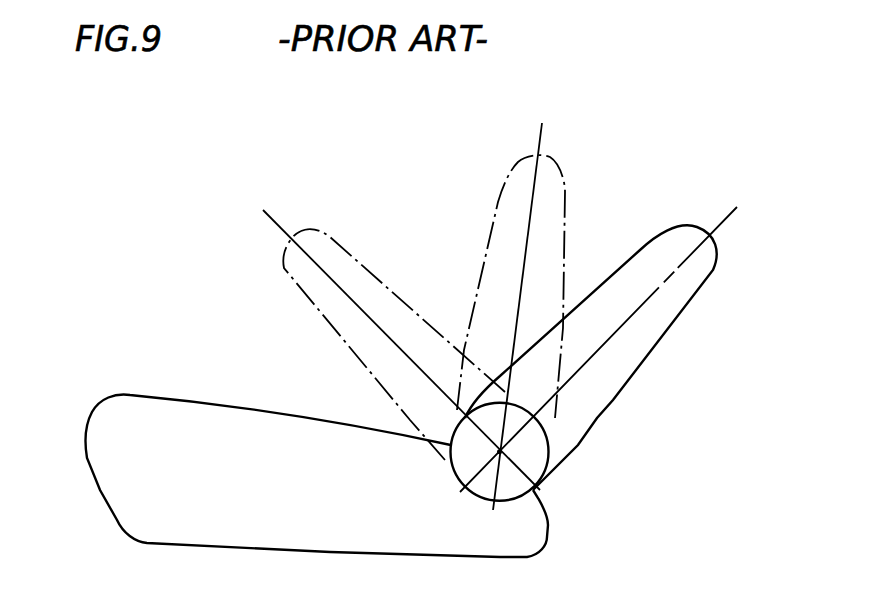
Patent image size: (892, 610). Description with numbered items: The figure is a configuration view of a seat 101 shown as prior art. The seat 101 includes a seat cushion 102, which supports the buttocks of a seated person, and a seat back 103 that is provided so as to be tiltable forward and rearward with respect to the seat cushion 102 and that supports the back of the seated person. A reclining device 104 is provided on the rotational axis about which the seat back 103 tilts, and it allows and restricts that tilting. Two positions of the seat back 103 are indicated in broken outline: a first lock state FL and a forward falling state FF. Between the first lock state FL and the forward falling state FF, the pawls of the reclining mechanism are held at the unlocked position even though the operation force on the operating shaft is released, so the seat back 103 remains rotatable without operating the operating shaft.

The seat 101 is at (623, 249).
The seat cushion 102 is at (255, 530).
The seat back 103 is at (628, 359).
The reclining device 104 is at (535, 457).
The forward falling state FF is at (391, 341).
The first lock state FL is at (511, 306).